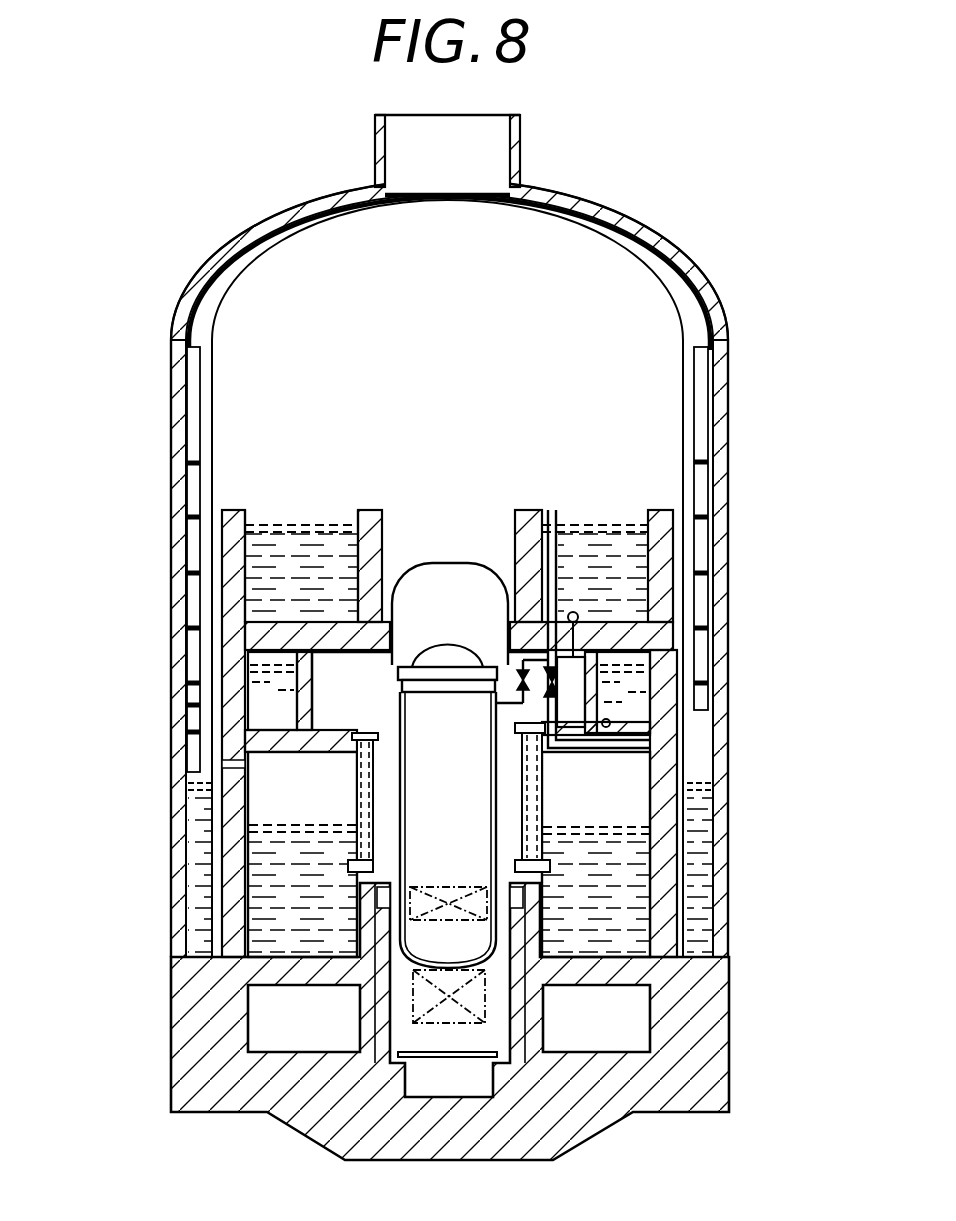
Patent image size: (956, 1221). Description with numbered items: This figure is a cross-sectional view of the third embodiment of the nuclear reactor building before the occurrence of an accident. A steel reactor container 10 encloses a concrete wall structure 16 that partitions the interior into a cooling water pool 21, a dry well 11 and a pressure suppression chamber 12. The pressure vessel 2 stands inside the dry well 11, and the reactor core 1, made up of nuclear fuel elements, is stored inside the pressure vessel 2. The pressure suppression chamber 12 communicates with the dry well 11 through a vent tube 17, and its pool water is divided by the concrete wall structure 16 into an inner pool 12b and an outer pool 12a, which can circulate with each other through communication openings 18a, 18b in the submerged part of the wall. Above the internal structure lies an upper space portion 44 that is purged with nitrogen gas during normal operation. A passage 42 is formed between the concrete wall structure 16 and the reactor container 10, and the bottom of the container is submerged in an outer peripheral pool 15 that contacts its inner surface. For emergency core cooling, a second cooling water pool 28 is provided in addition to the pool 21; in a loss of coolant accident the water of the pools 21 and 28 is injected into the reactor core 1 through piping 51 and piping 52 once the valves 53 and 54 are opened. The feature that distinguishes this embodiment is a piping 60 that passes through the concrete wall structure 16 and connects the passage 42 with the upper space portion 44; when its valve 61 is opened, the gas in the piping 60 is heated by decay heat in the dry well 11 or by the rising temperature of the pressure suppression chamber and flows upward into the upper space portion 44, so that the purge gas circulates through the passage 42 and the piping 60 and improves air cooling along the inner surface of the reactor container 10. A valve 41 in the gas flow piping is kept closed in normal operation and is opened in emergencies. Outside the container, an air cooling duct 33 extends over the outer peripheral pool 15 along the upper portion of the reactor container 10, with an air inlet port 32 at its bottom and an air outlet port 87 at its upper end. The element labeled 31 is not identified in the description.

The reactor core 1 is at (400, 918).
The pressure vessel 2 is at (410, 730).
The reactor container 10 is at (598, 232).
The dry well 11 is at (378, 745).
The pressure suppression chamber 12 is at (260, 905).
The outer pool 12a is at (215, 880).
The inner pool 12b is at (277, 857).
The outer peripheral pool 15 is at (707, 878).
The concrete wall structure 16 is at (233, 513).
The vent tube 17 is at (350, 812).
The base slab 18a is at (650, 940).
The pool wall 18b is at (670, 797).
The cooling water pool 21 is at (300, 545).
The cooling water pool 28 is at (253, 683).
The liner 31 is at (684, 500).
The air inlet port 32 is at (725, 703).
The air cooling duct 33 is at (680, 292).
The valve 41 is at (563, 600).
The passage 42 is at (680, 653).
The upper space portion 44 is at (258, 322).
The piping 51 is at (657, 628).
The piping 52 is at (570, 745).
The valve 53 is at (523, 673).
The valve 54 is at (545, 745).
The piping 60 is at (555, 592).
The valve 61 is at (625, 657).
The air outlet port 87 is at (500, 148).